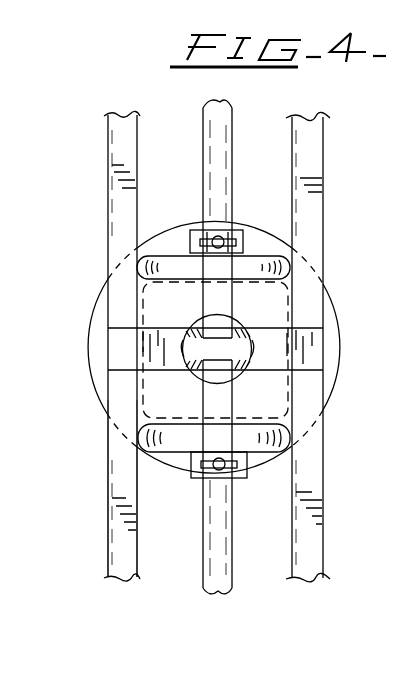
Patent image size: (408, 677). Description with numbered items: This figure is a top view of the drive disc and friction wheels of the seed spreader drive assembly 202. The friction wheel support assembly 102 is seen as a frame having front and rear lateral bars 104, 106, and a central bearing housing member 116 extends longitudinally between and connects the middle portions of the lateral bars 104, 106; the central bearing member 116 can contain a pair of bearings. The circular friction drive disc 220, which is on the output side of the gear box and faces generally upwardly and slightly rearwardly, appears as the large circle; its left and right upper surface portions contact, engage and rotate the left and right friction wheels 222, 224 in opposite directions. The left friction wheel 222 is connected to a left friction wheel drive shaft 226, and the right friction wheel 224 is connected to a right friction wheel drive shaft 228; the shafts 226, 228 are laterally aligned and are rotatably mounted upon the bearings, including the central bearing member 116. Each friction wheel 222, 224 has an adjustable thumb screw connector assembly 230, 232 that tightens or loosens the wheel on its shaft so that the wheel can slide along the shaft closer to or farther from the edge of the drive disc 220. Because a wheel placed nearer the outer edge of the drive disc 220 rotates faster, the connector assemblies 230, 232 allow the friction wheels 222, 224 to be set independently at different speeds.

The friction wheel support assembly 102 is at (108, 520).
The front lateral bar 104 is at (108, 197).
The rear lateral bar 106 is at (324, 212).
The central bearing housing member 116 is at (273, 373).
The seed spreader drive assembly 202 is at (96, 285).
The circular friction drive disc 220 is at (338, 305).
The left friction wheel 222 is at (292, 262).
The right friction wheel 224 is at (292, 447).
The left friction wheel drive shaft 226 is at (203, 150).
The right friction wheel drive shaft 228 is at (205, 552).
The thumb screw connector assembly 230 is at (190, 247).
The thumb screw connector assembly 232 is at (191, 466).